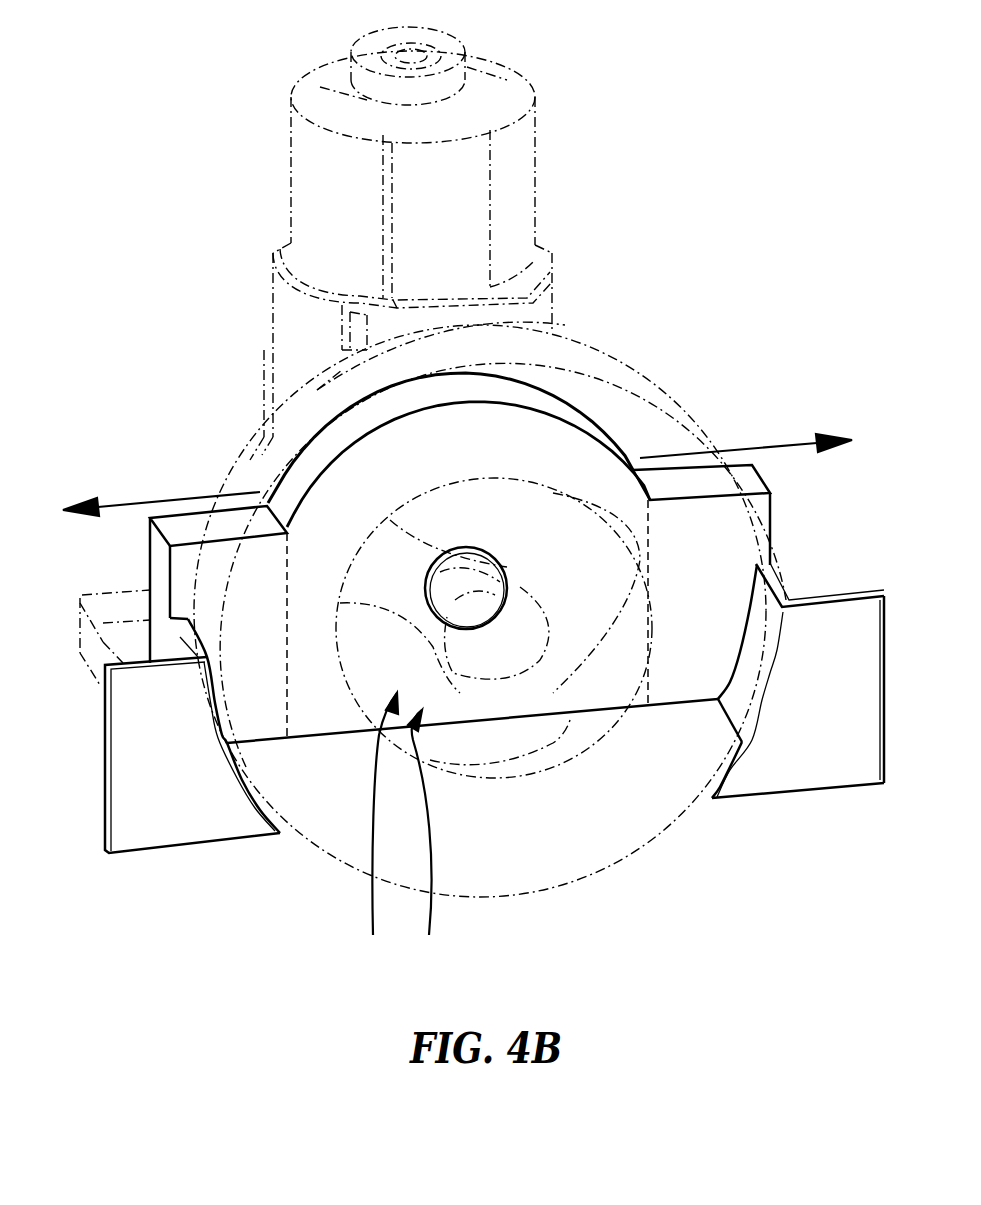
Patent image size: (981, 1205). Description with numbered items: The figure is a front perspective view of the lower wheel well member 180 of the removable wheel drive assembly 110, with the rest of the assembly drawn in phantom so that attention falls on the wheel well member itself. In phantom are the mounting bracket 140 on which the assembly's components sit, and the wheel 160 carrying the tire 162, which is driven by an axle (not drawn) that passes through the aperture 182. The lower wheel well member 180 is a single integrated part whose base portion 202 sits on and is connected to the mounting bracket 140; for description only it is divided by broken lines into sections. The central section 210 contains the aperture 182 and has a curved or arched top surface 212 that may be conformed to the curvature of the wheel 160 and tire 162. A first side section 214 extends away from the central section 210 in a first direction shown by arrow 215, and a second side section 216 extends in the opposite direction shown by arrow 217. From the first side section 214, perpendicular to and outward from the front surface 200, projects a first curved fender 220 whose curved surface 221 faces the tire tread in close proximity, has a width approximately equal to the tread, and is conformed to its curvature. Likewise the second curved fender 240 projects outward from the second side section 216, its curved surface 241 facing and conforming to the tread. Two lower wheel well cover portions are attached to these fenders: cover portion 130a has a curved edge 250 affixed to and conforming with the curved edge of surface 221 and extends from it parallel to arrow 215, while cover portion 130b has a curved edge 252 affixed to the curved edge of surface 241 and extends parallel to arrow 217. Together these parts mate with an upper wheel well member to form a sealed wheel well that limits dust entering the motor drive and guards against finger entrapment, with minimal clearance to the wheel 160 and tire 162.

The removable wheel drive assembly 110 is at (232, 300).
The lower wheel well cover portion 130a is at (221, 792).
The lower wheel well cover portion 130b is at (798, 700).
The mounting bracket 140 is at (102, 588).
The wheel 160 is at (478, 762).
The tire 162 is at (645, 373).
The lower wheel well member 180 is at (538, 407).
The aperture 182 is at (495, 613).
The front surface 200 is at (371, 826).
The base portion 202 is at (427, 836).
The central section 210 is at (496, 384).
The curved or arched top surface 212 is at (487, 378).
The first side section 214 is at (434, 624).
The arrow 215 is at (157, 500).
The second side section 216 is at (758, 603).
The arrow 217 is at (760, 447).
The first curved fender 220 is at (183, 618).
The curved surface 221 is at (220, 687).
The second curved fender 240 is at (777, 587).
The curved surface 241 is at (753, 645).
The curved edge 250 is at (243, 780).
The curved edge 252 is at (757, 725).